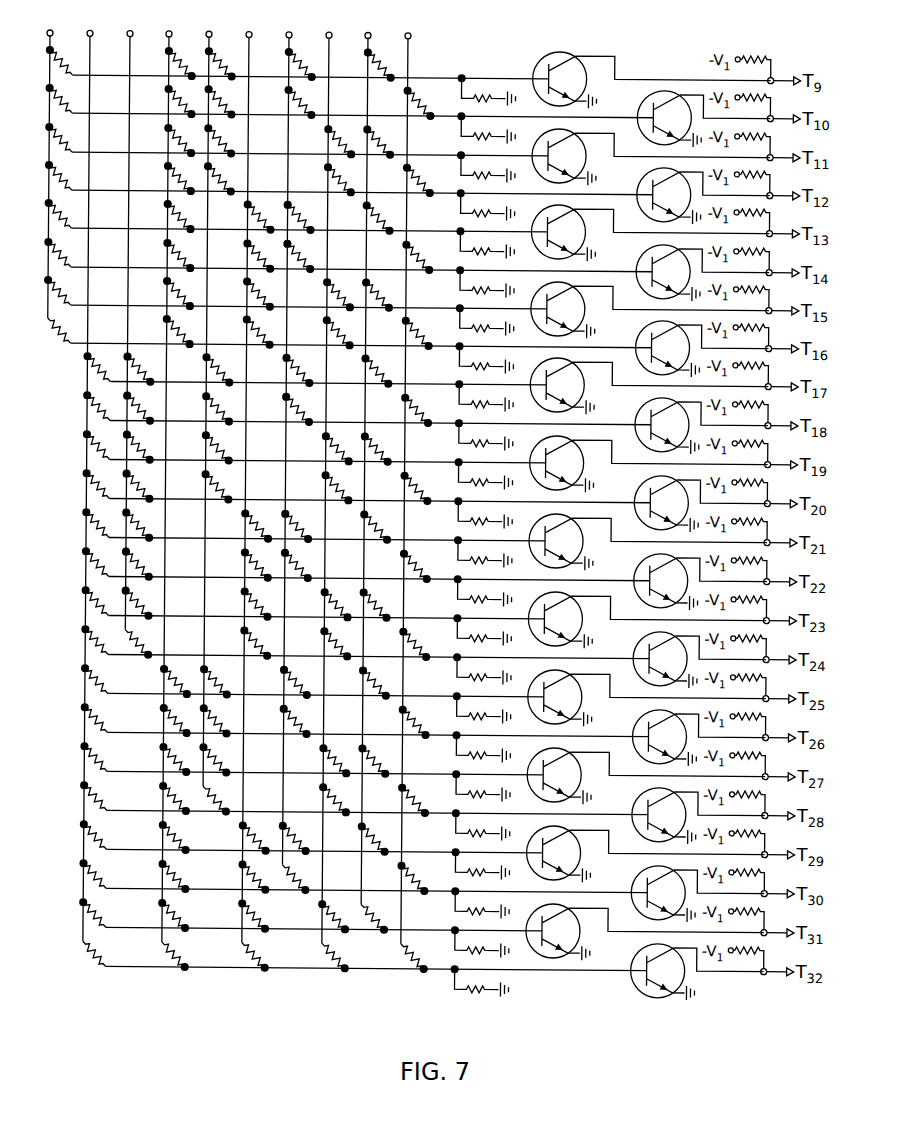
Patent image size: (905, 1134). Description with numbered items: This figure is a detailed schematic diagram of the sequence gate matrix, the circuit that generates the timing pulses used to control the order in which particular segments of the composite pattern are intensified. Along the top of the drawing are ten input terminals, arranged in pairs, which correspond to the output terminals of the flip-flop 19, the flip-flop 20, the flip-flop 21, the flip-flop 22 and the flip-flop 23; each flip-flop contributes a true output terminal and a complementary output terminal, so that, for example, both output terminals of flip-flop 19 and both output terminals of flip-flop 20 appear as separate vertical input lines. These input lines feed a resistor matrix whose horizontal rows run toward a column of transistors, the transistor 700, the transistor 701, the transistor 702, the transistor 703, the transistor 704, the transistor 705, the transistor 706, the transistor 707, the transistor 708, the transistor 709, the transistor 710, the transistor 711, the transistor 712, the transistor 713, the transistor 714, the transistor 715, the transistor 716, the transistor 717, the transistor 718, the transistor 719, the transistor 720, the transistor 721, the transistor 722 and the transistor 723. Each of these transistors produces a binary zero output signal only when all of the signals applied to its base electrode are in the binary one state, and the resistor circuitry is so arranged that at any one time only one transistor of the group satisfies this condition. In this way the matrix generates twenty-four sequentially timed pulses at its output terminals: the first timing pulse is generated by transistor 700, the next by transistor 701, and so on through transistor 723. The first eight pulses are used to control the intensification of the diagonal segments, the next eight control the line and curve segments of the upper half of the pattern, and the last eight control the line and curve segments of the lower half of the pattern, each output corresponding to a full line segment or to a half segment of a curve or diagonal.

The flip-flop 19 is at (384, 477).
The flip-flop 20 is at (305, 477).
The flip-flop 21 is at (225, 476).
The flip-flop 22 is at (146, 476).
The flip-flop 23 is at (66, 475).
The transistor 700 is at (583, 82).
The transistor 701 is at (639, 105).
The transistor 702 is at (583, 159).
The transistor 703 is at (639, 182).
The transistor 704 is at (583, 235).
The transistor 705 is at (639, 259).
The transistor 706 is at (583, 312).
The transistor 707 is at (639, 335).
The transistor 708 is at (583, 388).
The transistor 709 is at (639, 412).
The transistor 710 is at (583, 466).
The transistor 711 is at (639, 490).
The transistor 712 is at (583, 544).
The transistor 713 is at (639, 568).
The transistor 714 is at (583, 622).
The transistor 715 is at (639, 646).
The transistor 716 is at (583, 700).
The transistor 717 is at (639, 724).
The transistor 718 is at (583, 778).
The transistor 719 is at (639, 802).
The transistor 720 is at (583, 856).
The transistor 721 is at (639, 880).
The transistor 722 is at (583, 934).
The transistor 723 is at (639, 958).